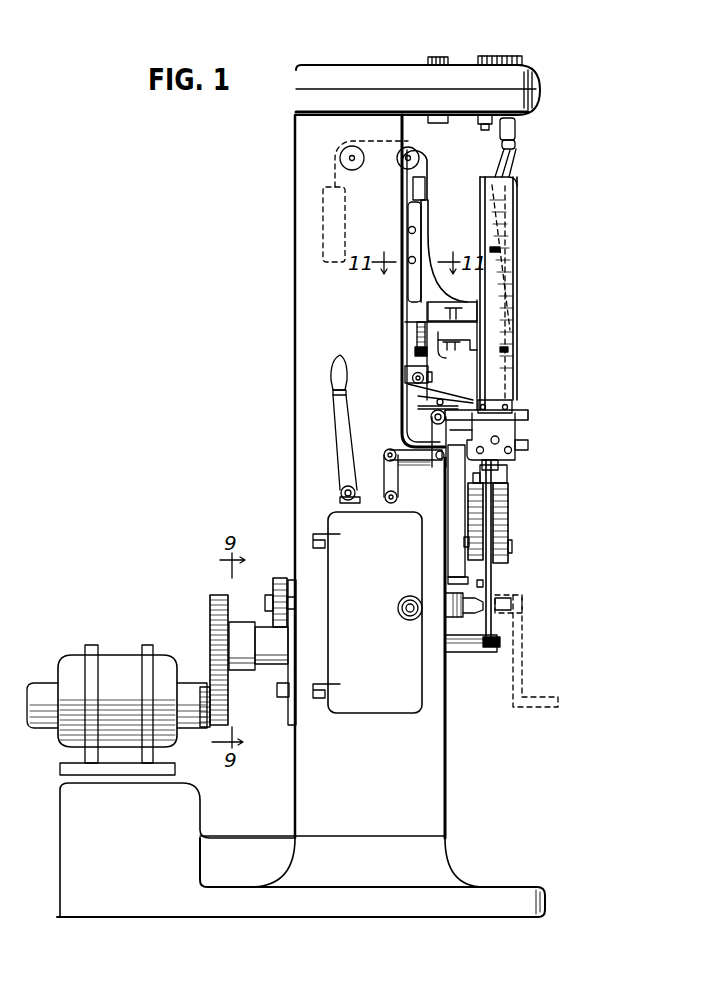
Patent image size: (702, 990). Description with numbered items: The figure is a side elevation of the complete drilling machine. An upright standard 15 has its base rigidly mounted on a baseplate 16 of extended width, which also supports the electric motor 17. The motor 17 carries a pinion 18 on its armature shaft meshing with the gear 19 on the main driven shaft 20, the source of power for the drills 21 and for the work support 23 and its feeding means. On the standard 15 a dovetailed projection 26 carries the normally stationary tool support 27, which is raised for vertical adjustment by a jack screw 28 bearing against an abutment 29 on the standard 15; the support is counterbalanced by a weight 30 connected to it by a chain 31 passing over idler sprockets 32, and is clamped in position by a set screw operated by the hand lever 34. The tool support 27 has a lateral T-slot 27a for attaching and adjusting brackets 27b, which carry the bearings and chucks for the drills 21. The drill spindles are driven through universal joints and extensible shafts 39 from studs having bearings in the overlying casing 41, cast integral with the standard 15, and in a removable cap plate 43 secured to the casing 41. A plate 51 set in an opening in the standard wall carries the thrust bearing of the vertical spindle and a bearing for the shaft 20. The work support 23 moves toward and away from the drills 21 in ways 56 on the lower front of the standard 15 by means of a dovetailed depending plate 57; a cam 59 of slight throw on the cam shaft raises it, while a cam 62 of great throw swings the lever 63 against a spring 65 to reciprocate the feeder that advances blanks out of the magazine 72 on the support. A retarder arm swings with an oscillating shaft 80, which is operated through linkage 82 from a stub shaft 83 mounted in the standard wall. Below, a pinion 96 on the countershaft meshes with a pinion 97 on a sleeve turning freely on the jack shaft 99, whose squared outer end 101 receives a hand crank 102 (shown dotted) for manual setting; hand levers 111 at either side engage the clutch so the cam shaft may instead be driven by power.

The standard 15 is at (295, 394).
The baseplate 16 is at (433, 865).
The electric motor 17 is at (121, 656).
The pinion 18 is at (228, 716).
The gear 19 is at (212, 603).
The main driven shaft 20 is at (234, 626).
The drills 21 is at (518, 398).
The work support 23 is at (528, 434).
The dovetailed projection 26 is at (415, 330).
The tool support 27 is at (428, 246).
The lateral T-slot 27a is at (428, 312).
The brackets 27b is at (462, 359).
The jack screw 28 is at (415, 351).
The abutment 29 is at (408, 366).
The weight 30 is at (330, 262).
The chain 31 is at (426, 195).
The idler sprockets 32 is at (400, 170).
The hand lever 34 is at (432, 226).
The extensible shafts 39 is at (518, 162).
The casing 41 is at (538, 103).
The removable cap plate 43 is at (368, 74).
The plate 51 is at (288, 725).
The ways 56 is at (457, 537).
The dovetailed depending plate 57 is at (440, 584).
The cam 59 is at (485, 567).
The cam 62 is at (508, 562).
The lever 63 is at (485, 581).
The spring 65 is at (463, 606).
The magazine 72 is at (505, 350).
The shaft 80 is at (410, 424).
The linkage 82 is at (418, 461).
The stub shaft 83 is at (388, 502).
The pinion 96 is at (275, 676).
The pinion 97 is at (280, 578).
The jack shaft 99 is at (470, 600).
The squared outer end 101 is at (522, 596).
The hand crank 102 is at (523, 682).
The hand levers 111 is at (342, 426).